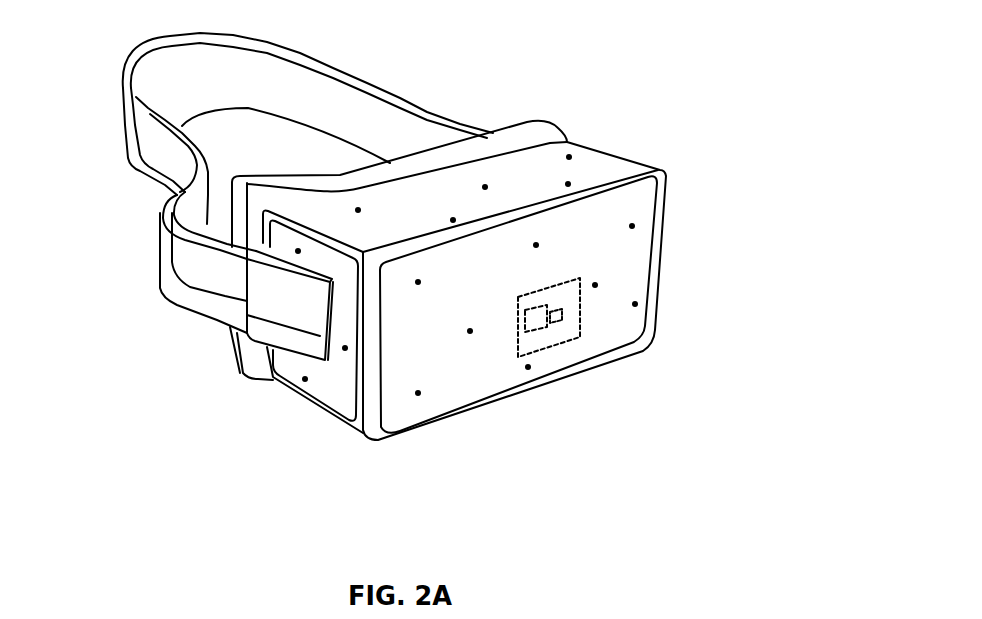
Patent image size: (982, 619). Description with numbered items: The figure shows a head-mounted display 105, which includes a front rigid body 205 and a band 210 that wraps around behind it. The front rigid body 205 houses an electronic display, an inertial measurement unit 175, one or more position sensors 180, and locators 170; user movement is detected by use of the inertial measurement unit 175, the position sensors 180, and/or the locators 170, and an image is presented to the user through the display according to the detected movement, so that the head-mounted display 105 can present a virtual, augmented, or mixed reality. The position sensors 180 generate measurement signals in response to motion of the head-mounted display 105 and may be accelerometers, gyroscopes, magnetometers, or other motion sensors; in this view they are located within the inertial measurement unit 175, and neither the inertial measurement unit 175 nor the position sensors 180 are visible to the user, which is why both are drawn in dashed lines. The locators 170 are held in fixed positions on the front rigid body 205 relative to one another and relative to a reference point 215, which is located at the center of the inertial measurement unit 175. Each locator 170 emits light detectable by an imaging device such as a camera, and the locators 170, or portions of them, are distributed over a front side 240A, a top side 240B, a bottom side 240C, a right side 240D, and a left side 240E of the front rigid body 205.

The head-mounted display 105 is at (42, 50).
The band 210 is at (398, 103).
The front rigid body 205 is at (664, 170).
The front side 240A is at (407, 408).
The top side 240B is at (338, 211).
The bottom side 240C is at (302, 410).
The right side 240D is at (338, 377).
The left side 240E is at (633, 158).
The locators 170 is at (635, 303).
The inertial measurement unit 175 is at (577, 317).
The position sensors 180 is at (538, 324).
The reference point 215 is at (556, 318).